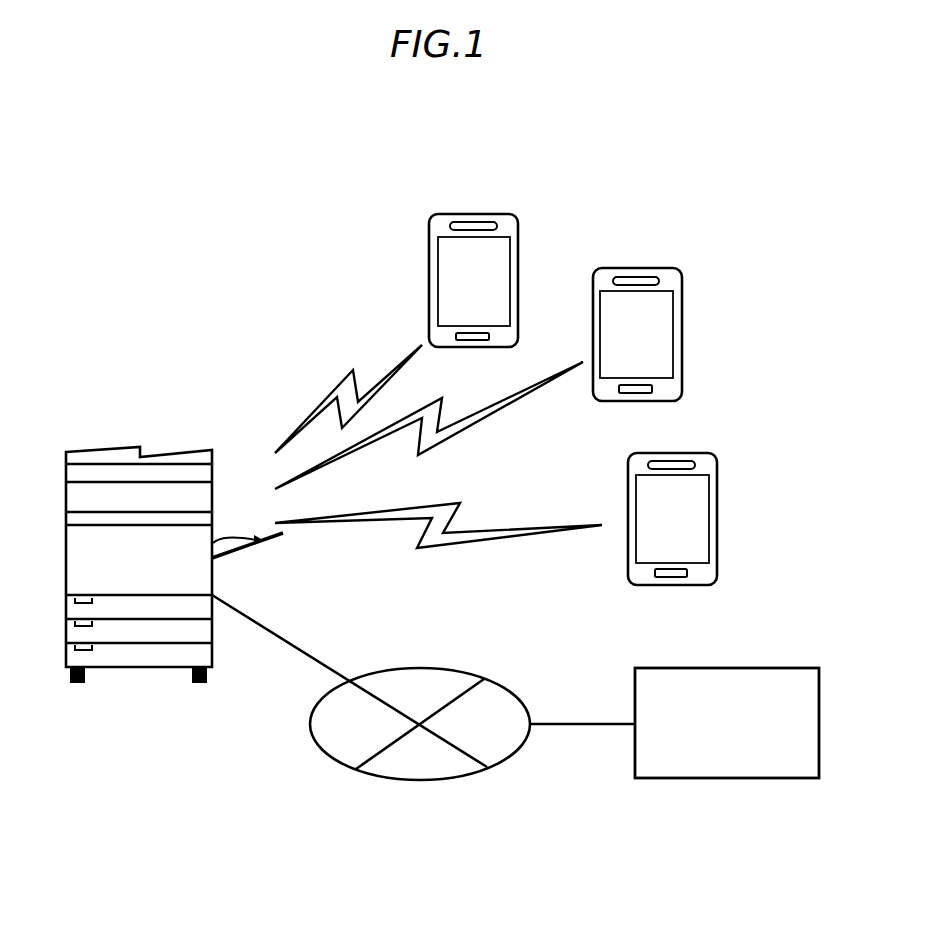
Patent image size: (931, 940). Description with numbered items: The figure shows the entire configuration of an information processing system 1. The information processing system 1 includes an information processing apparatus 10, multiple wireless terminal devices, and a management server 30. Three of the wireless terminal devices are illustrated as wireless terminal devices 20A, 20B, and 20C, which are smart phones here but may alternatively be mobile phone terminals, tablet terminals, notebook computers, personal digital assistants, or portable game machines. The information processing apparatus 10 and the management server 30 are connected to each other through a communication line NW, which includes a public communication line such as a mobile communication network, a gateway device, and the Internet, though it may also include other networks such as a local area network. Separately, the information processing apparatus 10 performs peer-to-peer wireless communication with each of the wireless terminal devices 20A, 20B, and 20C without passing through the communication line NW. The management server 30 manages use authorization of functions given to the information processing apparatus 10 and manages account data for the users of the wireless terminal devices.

The information processing system 1 is at (208, 292).
The information processing apparatus 10 is at (213, 491).
The wireless terminal device 20A is at (430, 300).
The wireless terminal device 20B is at (718, 502).
The wireless terminal device 20C is at (683, 358).
The communication line NW is at (439, 668).
The management server 30 is at (742, 668).